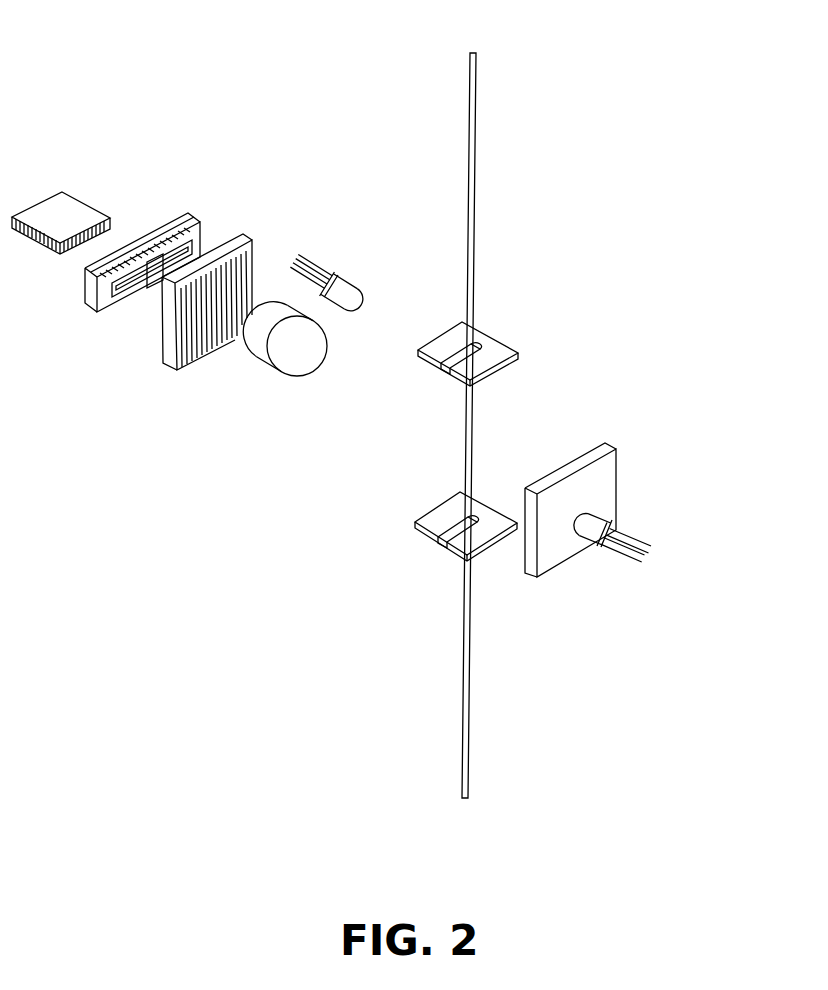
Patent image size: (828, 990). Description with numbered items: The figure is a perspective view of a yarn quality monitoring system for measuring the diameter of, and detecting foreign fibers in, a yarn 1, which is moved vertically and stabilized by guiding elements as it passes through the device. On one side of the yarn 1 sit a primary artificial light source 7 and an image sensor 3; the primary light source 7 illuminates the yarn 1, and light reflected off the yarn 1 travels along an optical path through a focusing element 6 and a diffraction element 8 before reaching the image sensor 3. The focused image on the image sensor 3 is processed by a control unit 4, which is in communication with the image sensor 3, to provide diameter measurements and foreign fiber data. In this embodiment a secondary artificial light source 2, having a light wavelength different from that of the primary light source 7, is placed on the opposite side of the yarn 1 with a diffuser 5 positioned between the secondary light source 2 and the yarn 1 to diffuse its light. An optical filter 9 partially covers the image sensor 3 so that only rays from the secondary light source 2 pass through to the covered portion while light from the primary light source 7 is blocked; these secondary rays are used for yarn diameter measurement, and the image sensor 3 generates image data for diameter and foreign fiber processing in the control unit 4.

The yarn 1 is at (476, 158).
The secondary artificial light source 2 is at (640, 530).
The image sensor 3 is at (170, 271).
The control unit 4 is at (72, 208).
The diffuser 5 is at (616, 448).
The focusing element 6 is at (290, 372).
The primary artificial light source 7 is at (347, 282).
The diffraction element 8 is at (252, 233).
The optical filter 9 is at (150, 288).